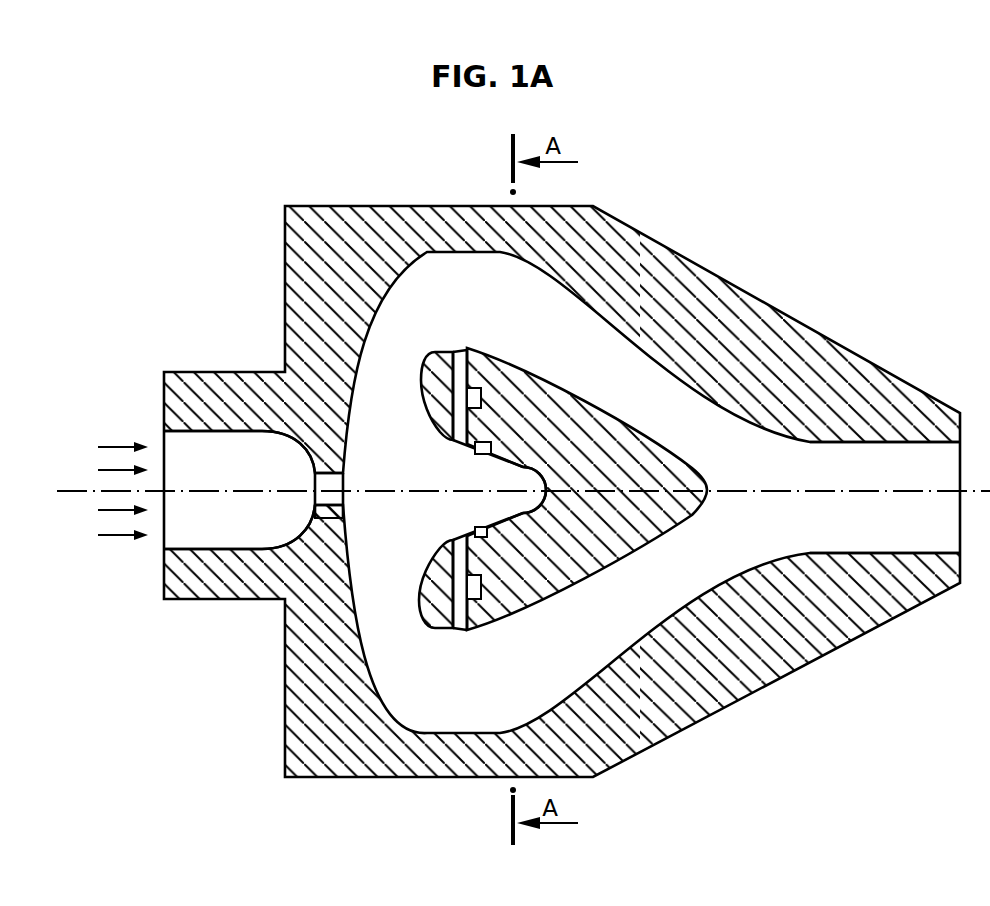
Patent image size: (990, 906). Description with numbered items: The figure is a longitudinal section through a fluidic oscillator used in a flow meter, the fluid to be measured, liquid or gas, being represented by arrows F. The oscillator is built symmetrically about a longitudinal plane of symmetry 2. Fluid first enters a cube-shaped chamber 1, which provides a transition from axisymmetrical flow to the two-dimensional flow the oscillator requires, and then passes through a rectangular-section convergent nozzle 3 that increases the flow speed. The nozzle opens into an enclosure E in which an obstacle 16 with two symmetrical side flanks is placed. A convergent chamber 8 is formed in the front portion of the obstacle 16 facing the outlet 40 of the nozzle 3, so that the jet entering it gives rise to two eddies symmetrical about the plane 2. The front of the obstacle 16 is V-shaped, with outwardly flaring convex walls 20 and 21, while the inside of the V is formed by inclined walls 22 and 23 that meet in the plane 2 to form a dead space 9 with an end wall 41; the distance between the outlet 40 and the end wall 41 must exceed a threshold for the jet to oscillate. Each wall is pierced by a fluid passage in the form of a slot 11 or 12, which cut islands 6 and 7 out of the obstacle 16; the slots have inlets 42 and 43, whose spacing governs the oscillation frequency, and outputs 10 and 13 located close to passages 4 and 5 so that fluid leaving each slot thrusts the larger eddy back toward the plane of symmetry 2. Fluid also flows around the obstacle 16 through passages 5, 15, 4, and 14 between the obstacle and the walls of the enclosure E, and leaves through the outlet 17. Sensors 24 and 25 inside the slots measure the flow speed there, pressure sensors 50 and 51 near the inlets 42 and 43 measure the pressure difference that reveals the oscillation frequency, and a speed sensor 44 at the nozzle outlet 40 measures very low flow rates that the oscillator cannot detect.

The chamber 1 is at (187, 460).
The longitudinal plane of symmetry 2 is at (85, 491).
The convergent nozzle 3 is at (260, 430).
The passage 4 is at (361, 623).
The passage 5 is at (360, 380).
The island 6 is at (430, 577).
The island 7 is at (423, 383).
The convergent chamber 8 is at (443, 503).
The dead space 9 is at (513, 503).
The output of slot 10 is at (460, 630).
The fluid passage (slot) 11 is at (433, 558).
The fluid passage (slot) 12 is at (456, 399).
The outlet of slot 13 is at (468, 350).
The passage 14 is at (596, 630).
The passage 15 is at (573, 363).
The obstacle 16 is at (650, 462).
The outlet 17 is at (923, 467).
The wall 20 is at (415, 378).
The wall 21 is at (420, 586).
The wall 22 is at (528, 467).
The wall 23 is at (524, 520).
The sensor 24 is at (478, 599).
The sensor 25 is at (481, 390).
The outlet of nozzle 40 is at (345, 473).
The end wall of dead zone 41 is at (548, 488).
The inlet of slot 42 is at (462, 533).
The inlet of slot 43 is at (457, 437).
The speed sensor 44 is at (322, 516).
The pressure sensor 50 is at (482, 538).
The pressure sensor 51 is at (490, 447).
The enclosure E is at (570, 325).
The fluid flow arrows F is at (118, 468).